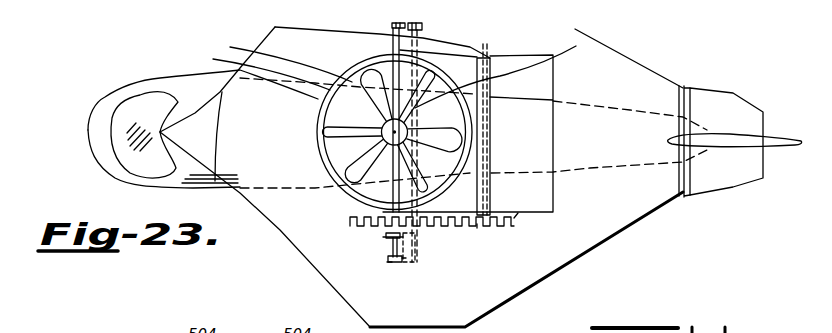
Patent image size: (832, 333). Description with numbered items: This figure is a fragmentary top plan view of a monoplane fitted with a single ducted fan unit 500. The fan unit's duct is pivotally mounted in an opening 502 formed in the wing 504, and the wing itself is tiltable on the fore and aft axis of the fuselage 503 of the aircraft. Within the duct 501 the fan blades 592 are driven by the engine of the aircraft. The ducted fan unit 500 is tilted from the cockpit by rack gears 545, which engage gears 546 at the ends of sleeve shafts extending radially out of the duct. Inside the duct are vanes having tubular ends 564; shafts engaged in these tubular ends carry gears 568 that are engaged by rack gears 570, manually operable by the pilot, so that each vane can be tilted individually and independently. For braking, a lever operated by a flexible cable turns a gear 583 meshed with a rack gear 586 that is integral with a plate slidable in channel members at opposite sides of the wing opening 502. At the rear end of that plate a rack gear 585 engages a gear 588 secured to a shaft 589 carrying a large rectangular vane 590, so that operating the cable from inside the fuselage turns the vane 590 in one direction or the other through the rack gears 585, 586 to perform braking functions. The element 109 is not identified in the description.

The horizontal stabilizer fin 109 is at (712, 36).
The ducted fan unit 500 is at (275, 27).
The duct 501 is at (230, 47).
The wing opening 502 is at (213, 59).
The fuselage 503 is at (185, 92).
The wing 504 is at (230, 74).
The rack gears 545 is at (410, 23).
The gears 546 is at (392, 24).
The tubular ends 564 is at (350, 215).
The gears 568 is at (387, 262).
The rack gears 570 is at (402, 258).
The gear 583 is at (405, 112).
The rack gear 585 is at (514, 218).
The rack gear 586 is at (383, 236).
The gear 588 is at (477, 228).
The shaft 589 is at (575, 29).
The large rectangular vane 590 is at (576, 46).
The fan blades 592 is at (405, 90).